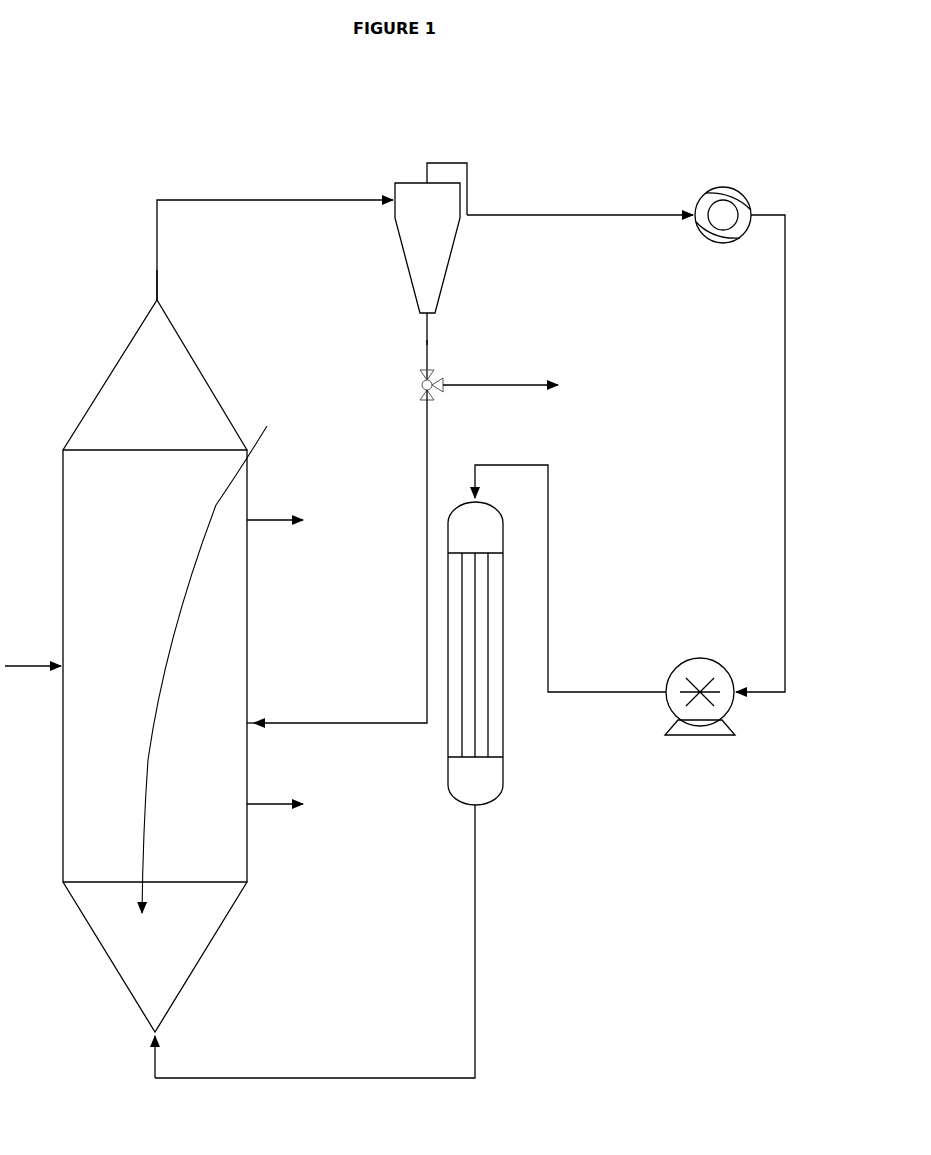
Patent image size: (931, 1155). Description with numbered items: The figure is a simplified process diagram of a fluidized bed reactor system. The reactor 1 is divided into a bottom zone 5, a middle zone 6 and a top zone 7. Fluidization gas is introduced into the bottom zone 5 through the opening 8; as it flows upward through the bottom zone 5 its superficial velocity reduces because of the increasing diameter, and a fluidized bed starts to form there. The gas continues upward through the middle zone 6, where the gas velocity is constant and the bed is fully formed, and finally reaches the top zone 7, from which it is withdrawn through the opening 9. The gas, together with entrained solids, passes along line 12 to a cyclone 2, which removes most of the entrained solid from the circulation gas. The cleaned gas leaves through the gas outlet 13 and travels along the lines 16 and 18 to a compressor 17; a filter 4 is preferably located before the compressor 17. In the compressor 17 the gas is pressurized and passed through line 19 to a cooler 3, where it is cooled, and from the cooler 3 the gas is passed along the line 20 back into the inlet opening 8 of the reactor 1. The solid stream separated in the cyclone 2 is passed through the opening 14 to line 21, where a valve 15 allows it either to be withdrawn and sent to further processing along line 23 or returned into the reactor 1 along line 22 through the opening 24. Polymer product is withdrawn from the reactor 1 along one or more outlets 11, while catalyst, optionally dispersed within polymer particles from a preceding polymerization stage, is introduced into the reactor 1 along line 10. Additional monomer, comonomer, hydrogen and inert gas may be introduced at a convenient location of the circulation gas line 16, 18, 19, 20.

The reactor 1 is at (154, 666).
The cyclone 2 is at (410, 195).
The cooler 3 is at (484, 705).
The filter 4 is at (726, 189).
The bottom zone 5 is at (183, 958).
The middle zone 6 is at (232, 578).
The top zone 7 is at (105, 415).
The opening 8 is at (159, 1033).
The opening 9 is at (160, 299).
The line 10 is at (33, 654).
The outlets 11 is at (260, 515).
The line 12 is at (222, 197).
The gas outlet 13 is at (425, 178).
The opening 14 is at (424, 320).
The valve 15 is at (438, 371).
The line 16 is at (505, 214).
The compressor 17 is at (713, 701).
The line 18 is at (782, 357).
The line 19 is at (586, 697).
The line 20 is at (478, 916).
The line 21 is at (424, 345).
The line 22 is at (423, 520).
The line 23 is at (491, 384).
The opening 24 is at (251, 719).